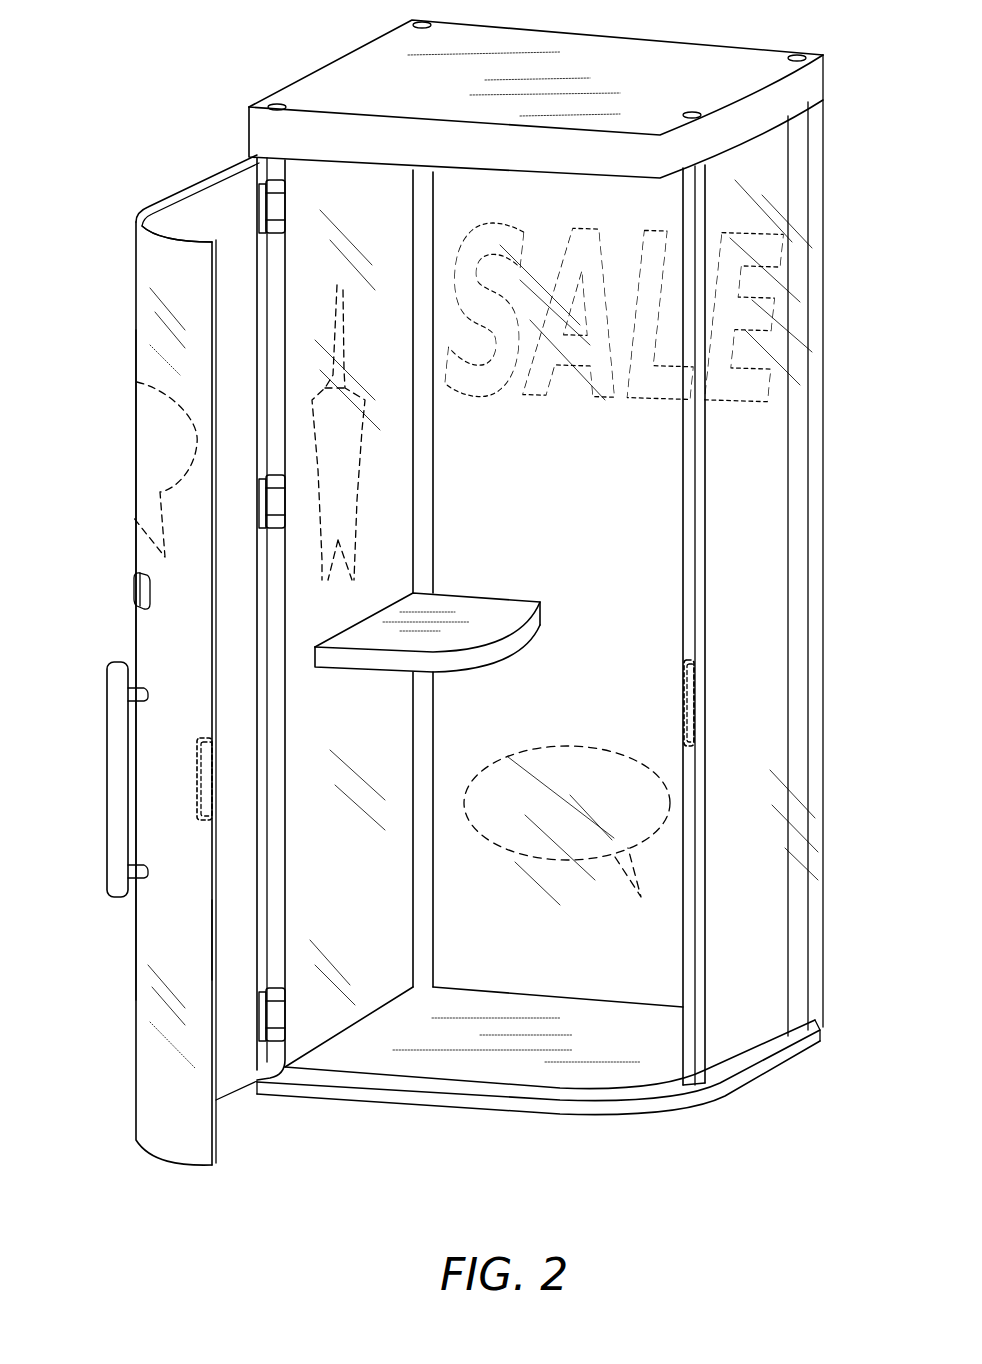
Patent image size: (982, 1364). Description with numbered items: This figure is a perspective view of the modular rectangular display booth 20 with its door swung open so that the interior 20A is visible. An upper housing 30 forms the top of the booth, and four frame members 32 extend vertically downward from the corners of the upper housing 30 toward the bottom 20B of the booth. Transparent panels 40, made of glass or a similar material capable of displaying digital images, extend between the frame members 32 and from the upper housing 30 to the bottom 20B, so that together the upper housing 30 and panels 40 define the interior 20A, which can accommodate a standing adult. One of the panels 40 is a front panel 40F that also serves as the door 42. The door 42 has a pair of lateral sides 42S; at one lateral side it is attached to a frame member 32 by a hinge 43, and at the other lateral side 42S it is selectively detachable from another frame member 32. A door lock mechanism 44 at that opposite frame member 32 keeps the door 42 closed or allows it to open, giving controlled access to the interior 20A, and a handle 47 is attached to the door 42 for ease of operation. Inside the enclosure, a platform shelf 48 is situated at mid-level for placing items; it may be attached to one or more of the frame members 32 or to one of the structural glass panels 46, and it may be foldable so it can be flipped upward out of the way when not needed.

The display booth 20 is at (325, 1182).
The interior 20A is at (460, 1034).
The bottom 20B is at (603, 1118).
The upper housing 30 is at (825, 86).
The frame members 32 is at (436, 468).
The panels 40 is at (154, 660).
The front panel 40F is at (125, 304).
The door 42 is at (135, 328).
The lateral sides 42S is at (215, 917).
The hinge 43 is at (262, 203).
The door lock mechanism 44 is at (214, 776).
The structural glass panels 46 is at (760, 546).
The handle 47 is at (106, 775).
The platform shelf 48 is at (490, 594).